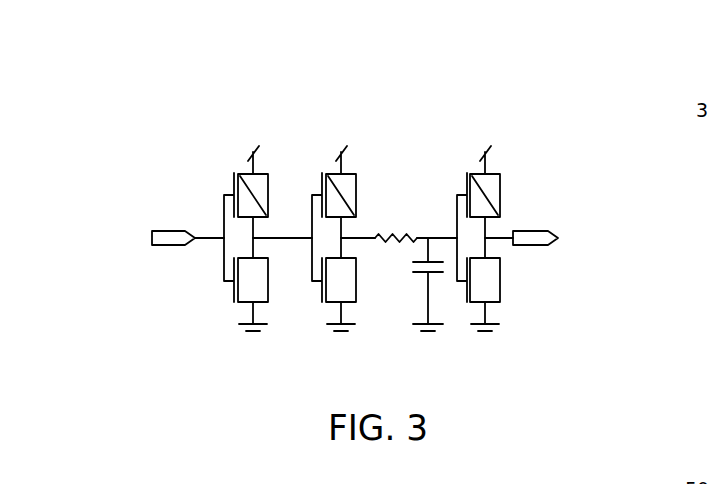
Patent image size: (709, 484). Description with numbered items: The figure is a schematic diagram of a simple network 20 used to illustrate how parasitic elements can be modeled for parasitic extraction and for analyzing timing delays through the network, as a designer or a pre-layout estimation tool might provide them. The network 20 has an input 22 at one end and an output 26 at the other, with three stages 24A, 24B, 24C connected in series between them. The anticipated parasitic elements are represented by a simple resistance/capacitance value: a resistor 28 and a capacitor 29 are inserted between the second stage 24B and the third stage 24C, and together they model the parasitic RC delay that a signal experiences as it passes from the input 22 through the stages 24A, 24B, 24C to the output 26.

The network 20 is at (206, 105).
The input 22 is at (165, 236).
The stage 24A is at (260, 168).
The stage 24B is at (353, 160).
The stage 24C is at (498, 158).
The output 26 is at (537, 235).
The resistor 28 is at (406, 220).
The capacitor 29 is at (413, 280).